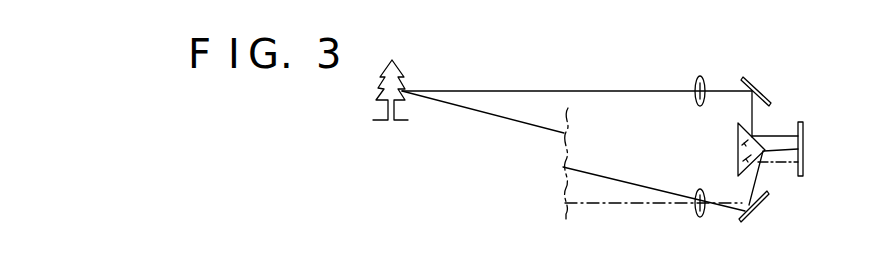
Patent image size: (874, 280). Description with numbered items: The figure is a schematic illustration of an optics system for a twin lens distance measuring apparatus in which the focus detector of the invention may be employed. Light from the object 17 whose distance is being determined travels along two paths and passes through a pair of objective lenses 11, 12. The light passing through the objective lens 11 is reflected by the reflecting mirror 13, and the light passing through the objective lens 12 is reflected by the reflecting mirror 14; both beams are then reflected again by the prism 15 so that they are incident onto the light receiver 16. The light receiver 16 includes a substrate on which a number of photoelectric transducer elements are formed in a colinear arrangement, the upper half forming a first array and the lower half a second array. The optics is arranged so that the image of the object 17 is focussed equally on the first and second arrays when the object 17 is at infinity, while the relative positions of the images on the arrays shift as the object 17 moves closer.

The objective lens 11 is at (698, 80).
The objective lens 12 is at (698, 192).
The reflecting mirror 13 is at (752, 80).
The reflecting mirror 14 is at (757, 208).
The prism 15 is at (738, 145).
The light receiver 16 is at (803, 136).
The object 17 is at (397, 67).